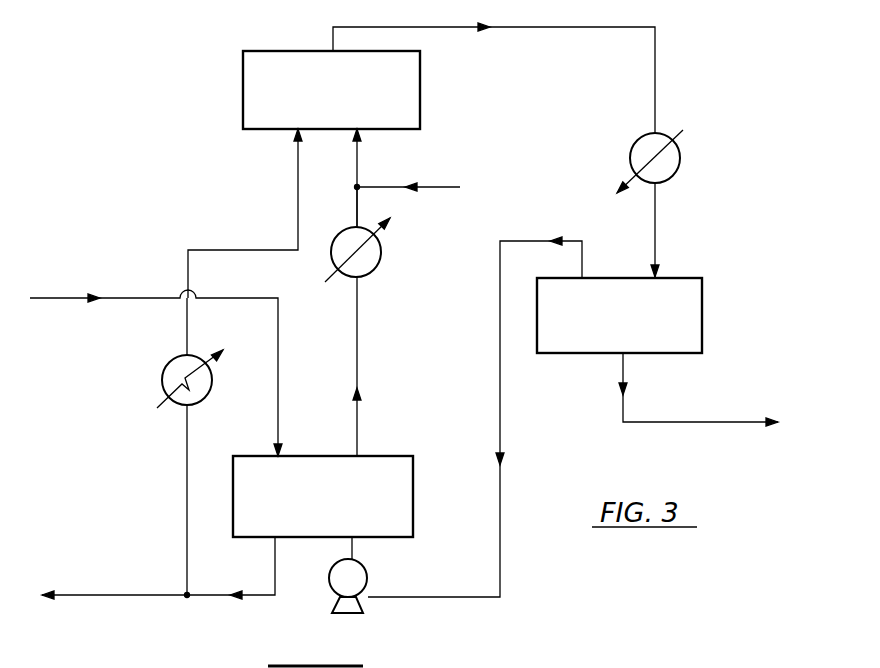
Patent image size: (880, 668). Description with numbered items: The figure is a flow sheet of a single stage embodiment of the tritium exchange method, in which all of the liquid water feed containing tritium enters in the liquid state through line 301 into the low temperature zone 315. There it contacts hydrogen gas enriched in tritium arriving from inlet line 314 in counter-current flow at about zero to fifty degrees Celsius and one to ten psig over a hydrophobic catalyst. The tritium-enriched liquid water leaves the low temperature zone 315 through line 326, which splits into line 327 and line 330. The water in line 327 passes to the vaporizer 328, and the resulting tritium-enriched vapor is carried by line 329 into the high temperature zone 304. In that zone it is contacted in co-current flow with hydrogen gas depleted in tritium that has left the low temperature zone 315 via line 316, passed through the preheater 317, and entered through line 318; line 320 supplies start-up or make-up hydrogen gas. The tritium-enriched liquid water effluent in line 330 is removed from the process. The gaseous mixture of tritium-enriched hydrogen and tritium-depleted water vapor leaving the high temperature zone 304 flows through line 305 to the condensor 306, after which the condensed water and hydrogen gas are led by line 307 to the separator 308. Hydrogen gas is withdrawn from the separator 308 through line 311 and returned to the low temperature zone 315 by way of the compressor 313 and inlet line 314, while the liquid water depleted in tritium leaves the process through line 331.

The line 301 is at (72, 298).
The high temperature zone 304 is at (243, 100).
The line 305 is at (657, 70).
The condensor 306 is at (678, 161).
The line 307 is at (655, 228).
The separator 308 is at (697, 277).
The line 311 is at (537, 241).
The compressor 313 is at (367, 578).
The inlet line 314 is at (355, 546).
The low temperature zone 315 is at (384, 456).
The line 316 is at (358, 352).
The preheater 317 is at (375, 270).
The line 318 is at (357, 202).
The line 320 is at (447, 187).
The line 326 is at (275, 572).
The line 327 is at (185, 477).
The vaporizer 328 is at (162, 380).
The line 329 is at (238, 250).
The line 330 is at (136, 595).
The line 331 is at (705, 422).